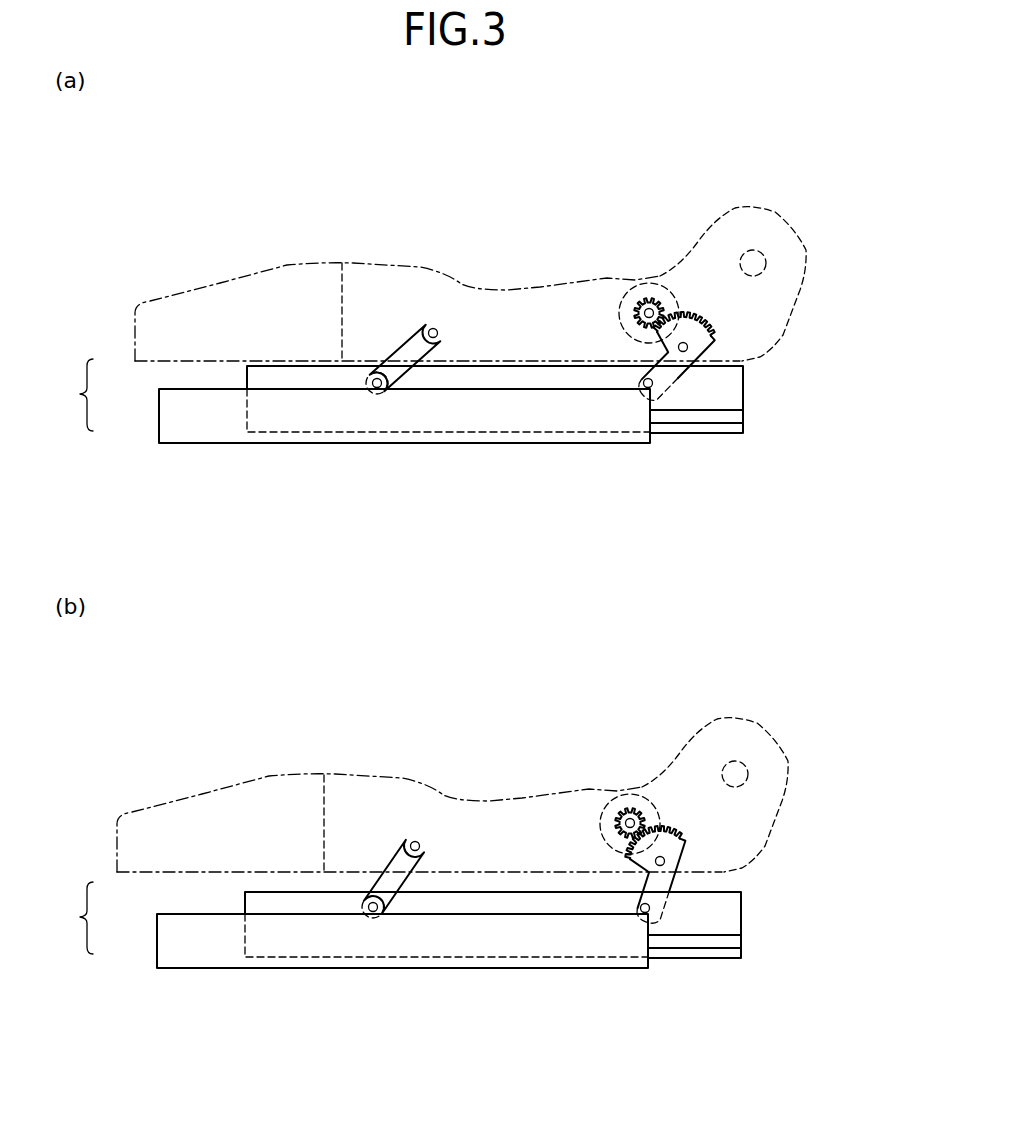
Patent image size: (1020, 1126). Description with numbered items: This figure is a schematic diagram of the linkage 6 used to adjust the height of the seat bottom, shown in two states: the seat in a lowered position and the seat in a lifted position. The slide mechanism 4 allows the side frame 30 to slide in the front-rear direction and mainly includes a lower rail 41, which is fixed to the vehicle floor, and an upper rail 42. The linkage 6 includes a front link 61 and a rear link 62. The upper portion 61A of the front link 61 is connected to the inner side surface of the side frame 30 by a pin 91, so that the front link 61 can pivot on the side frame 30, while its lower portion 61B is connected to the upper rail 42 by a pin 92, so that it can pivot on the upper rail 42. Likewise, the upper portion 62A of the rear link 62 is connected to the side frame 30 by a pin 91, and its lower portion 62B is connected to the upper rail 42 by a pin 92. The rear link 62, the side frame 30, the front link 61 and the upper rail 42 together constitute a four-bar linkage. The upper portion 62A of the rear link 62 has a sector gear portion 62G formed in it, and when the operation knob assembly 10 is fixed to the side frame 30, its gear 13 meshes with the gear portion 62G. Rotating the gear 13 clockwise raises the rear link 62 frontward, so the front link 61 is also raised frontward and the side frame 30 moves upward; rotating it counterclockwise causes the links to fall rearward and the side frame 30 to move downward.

The slide mechanism 4 is at (75, 656).
The lower rail 41 is at (159, 416).
The upper rail 42 is at (247, 380).
The side frame 30 is at (302, 268).
The operation knob assembly 10 is at (632, 288).
The gear 13 is at (637, 310).
The linkage 6 is at (718, 307).
The front link 61 is at (405, 352).
The upper portion of front link 61A is at (430, 318).
The lower portion of front link 61B is at (360, 373).
The rear link 62 is at (664, 357).
The upper portion of rear link 62A is at (724, 345).
The lower portion of rear link 62B is at (657, 395).
The sector gear portion 62G is at (687, 310).
The pin 91 is at (445, 328).
The pin 92 is at (383, 388).